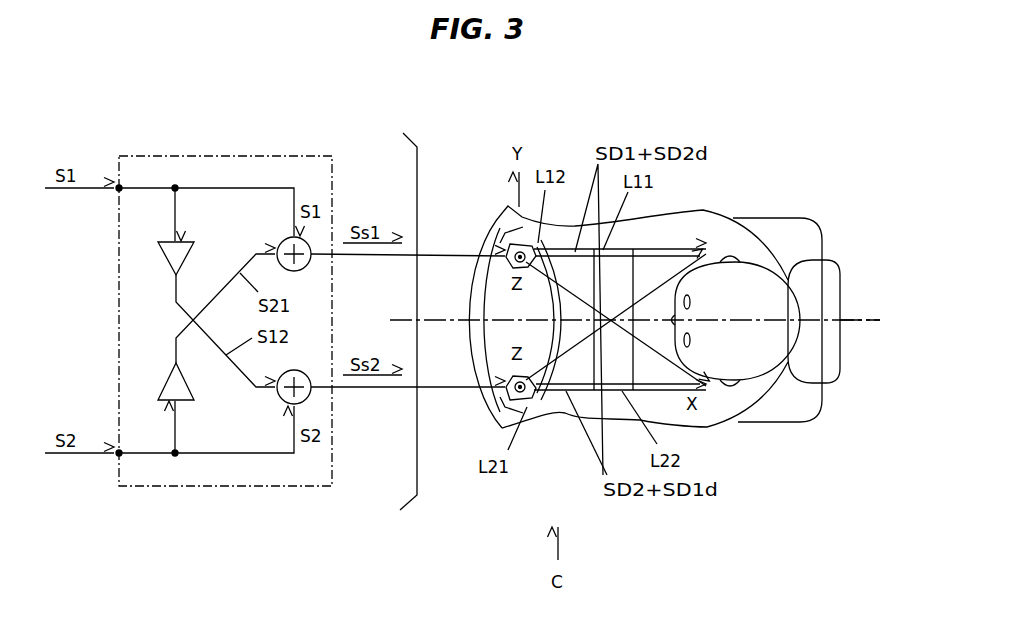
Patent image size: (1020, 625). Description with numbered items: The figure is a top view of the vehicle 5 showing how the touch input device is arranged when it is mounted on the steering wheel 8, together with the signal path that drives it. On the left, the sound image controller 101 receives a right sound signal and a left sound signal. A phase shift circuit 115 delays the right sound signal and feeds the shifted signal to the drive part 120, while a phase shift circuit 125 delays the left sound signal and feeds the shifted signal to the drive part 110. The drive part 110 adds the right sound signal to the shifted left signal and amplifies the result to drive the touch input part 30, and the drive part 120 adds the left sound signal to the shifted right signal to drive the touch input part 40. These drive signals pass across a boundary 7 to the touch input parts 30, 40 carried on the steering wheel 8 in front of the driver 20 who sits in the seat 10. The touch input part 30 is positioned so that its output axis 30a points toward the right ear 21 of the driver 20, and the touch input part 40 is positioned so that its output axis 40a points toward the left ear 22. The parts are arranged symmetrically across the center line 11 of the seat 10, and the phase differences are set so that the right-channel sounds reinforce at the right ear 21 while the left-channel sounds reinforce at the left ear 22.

The sound image controller 101 is at (197, 155).
The drive part 110 is at (279, 241).
The drive part 120 is at (283, 401).
The phase shift circuit 115 is at (162, 258).
The phase shift circuit 125 is at (163, 381).
The vehicle 5 is at (476, 130).
The wall / partition 7 is at (421, 470).
The steering wheel 8 is at (487, 406).
The seat 10 is at (803, 220).
The center line 11 is at (851, 320).
The driver 20 is at (773, 363).
The right ear 21 is at (731, 254).
The left ear 22 is at (733, 392).
The touch input part 30 is at (506, 258).
The output axis 30a is at (643, 250).
The touch input part 40 is at (508, 380).
The output axis 40a is at (565, 408).